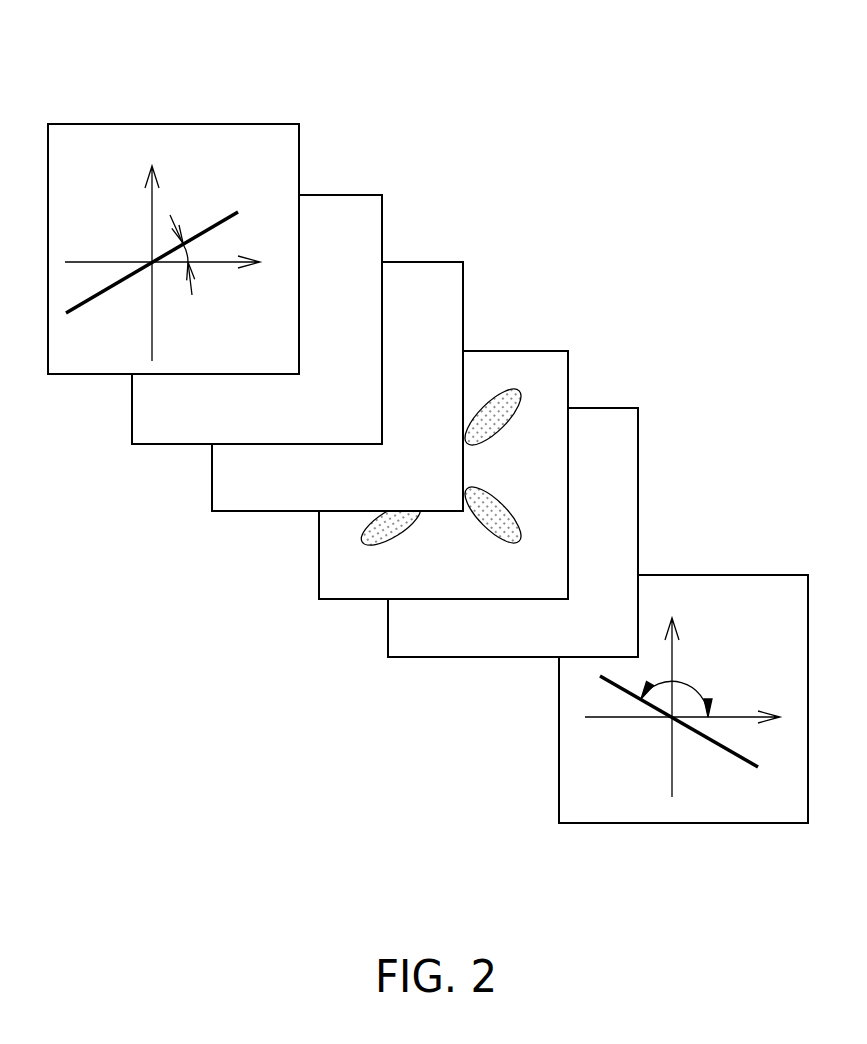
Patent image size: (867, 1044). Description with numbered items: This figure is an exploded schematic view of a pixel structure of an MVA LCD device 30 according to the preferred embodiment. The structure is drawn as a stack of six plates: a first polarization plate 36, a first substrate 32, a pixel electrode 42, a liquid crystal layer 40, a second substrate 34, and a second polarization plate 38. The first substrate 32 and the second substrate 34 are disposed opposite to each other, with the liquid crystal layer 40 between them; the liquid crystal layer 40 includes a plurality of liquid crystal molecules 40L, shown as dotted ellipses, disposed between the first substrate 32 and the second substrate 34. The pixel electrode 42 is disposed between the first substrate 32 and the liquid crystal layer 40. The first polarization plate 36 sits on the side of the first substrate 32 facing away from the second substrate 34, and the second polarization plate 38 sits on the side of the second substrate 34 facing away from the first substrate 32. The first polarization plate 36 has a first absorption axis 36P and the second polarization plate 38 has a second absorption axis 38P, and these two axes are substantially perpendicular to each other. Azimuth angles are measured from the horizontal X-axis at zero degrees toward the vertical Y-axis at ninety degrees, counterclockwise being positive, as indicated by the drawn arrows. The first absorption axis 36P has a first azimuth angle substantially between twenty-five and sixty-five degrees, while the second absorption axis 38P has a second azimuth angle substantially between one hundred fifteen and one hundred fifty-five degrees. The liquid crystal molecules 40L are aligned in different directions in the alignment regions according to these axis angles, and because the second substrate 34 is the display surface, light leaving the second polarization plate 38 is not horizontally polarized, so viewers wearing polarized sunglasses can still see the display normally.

The pixel structure of an MVA LCD device 30 is at (722, 82).
The first substrate 32 is at (338, 193).
The second substrate 34 is at (602, 407).
The first polarization plate 36 is at (253, 123).
The first absorption axis 36P is at (95, 295).
The second polarization plate 38 is at (763, 573).
The second absorption axis 38P is at (717, 745).
The liquid crystal layer 40 is at (455, 449).
The liquid crystal molecules 40L is at (503, 417).
The pixel electrode 42 is at (418, 260).